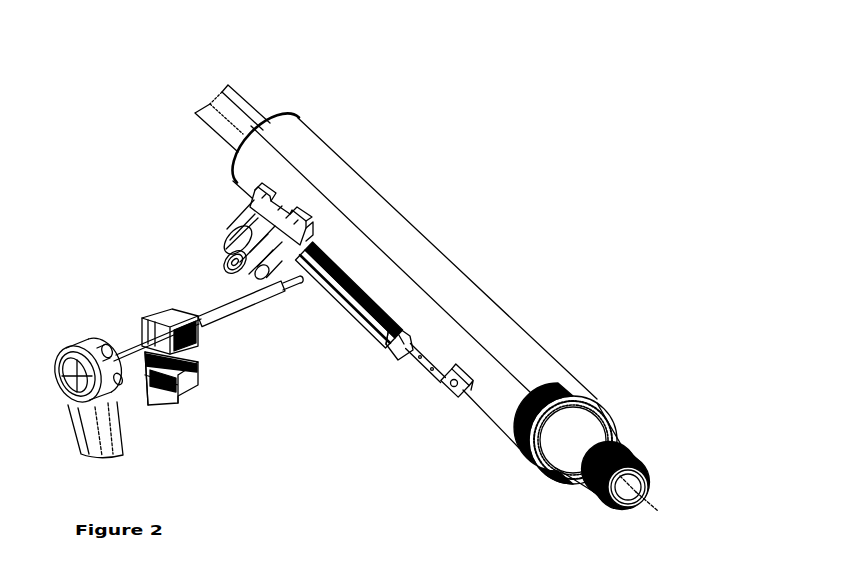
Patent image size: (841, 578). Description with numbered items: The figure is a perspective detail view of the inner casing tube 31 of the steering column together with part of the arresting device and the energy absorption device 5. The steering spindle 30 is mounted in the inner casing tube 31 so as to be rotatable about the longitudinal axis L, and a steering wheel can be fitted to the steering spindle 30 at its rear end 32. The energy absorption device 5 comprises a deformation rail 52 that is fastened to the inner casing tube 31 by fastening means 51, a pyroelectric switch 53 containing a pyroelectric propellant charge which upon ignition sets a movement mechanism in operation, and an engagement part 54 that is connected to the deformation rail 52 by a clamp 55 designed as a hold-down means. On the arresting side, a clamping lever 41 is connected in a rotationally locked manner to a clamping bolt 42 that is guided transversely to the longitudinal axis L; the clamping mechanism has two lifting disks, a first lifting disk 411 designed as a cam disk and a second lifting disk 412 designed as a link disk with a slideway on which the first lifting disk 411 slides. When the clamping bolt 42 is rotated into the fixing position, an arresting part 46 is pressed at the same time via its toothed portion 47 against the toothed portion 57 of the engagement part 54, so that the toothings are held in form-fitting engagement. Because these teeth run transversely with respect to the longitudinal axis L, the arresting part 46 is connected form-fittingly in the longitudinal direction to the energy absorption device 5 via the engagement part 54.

The energy absorption device 5 is at (316, 289).
The steering spindle 30 is at (592, 433).
The inner casing tube 31 is at (539, 370).
The rear end 32 is at (638, 460).
The clamping lever 41 is at (88, 432).
The first lifting disk 411 is at (108, 342).
The second lifting disk 412 is at (163, 320).
The clamping bolt 42 is at (210, 317).
The arresting part 46 is at (175, 359).
The toothed portion 47 is at (199, 358).
The fastening means 51 is at (453, 395).
The deformation rail 52 is at (414, 352).
The pyroelectric switch 53 is at (222, 252).
The engagement part 54 is at (360, 317).
The clamp 55 is at (306, 212).
The toothed portion 57 is at (357, 277).
The longitudinal axis L is at (654, 511).